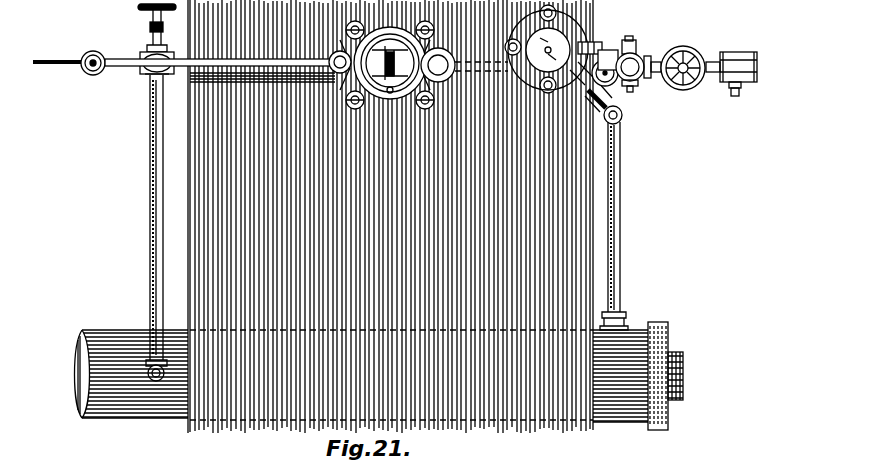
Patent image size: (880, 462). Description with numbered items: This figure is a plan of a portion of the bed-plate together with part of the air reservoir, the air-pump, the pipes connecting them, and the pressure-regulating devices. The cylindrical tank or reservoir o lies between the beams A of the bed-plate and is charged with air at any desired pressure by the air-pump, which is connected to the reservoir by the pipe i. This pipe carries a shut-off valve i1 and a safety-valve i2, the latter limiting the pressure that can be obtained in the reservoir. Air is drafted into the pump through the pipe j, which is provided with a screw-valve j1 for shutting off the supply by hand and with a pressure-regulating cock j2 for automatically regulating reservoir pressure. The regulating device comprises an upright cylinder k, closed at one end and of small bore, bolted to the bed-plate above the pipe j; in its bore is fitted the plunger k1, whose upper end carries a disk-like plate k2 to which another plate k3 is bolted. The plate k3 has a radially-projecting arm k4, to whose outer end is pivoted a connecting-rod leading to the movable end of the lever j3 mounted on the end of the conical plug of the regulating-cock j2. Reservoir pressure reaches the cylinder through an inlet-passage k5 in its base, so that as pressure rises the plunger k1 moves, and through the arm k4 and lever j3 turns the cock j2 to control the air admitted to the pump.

The beams A is at (318, 215).
The pipe i is at (158, 228).
The shut-off valve i1 is at (157, 39).
The safety-valve i2 is at (75, 59).
The cylindrical tank or reservoir o is at (379, 376).
The upright cylinder k is at (546, 49).
The plunger k1 is at (590, 42).
The disk-like plate k2 is at (555, 61).
The plate k3 is at (540, 38).
The radially-projecting arm k4 is at (581, 88).
The inlet-passage k5 is at (618, 178).
The pipe j is at (658, 50).
The screw-valve j1 is at (683, 46).
The pressure-regulating cock j2 is at (617, 80).
The lever j3 is at (626, 38).